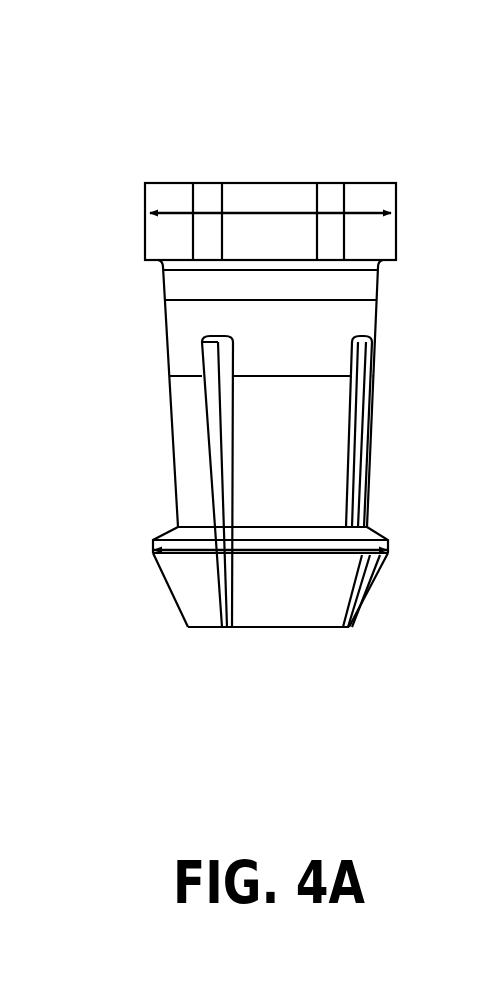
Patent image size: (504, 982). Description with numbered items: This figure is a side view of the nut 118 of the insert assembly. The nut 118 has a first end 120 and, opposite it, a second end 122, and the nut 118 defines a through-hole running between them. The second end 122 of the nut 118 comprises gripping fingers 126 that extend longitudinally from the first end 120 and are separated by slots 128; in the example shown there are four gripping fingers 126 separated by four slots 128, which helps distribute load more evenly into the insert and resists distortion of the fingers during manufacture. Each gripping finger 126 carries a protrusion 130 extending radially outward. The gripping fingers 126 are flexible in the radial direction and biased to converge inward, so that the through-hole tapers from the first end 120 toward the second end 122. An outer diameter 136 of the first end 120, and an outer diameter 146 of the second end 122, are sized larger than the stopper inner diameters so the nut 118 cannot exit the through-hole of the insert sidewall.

The nut 118 is at (74, 67).
The first end 120 is at (141, 178).
The second end 122 is at (354, 633).
The gripping fingers 126 is at (282, 590).
The slots 128 is at (373, 410).
The protrusion 130 is at (175, 565).
The outer diameter of the first end 136 is at (264, 213).
The outer diameter of the second end 146 is at (260, 556).